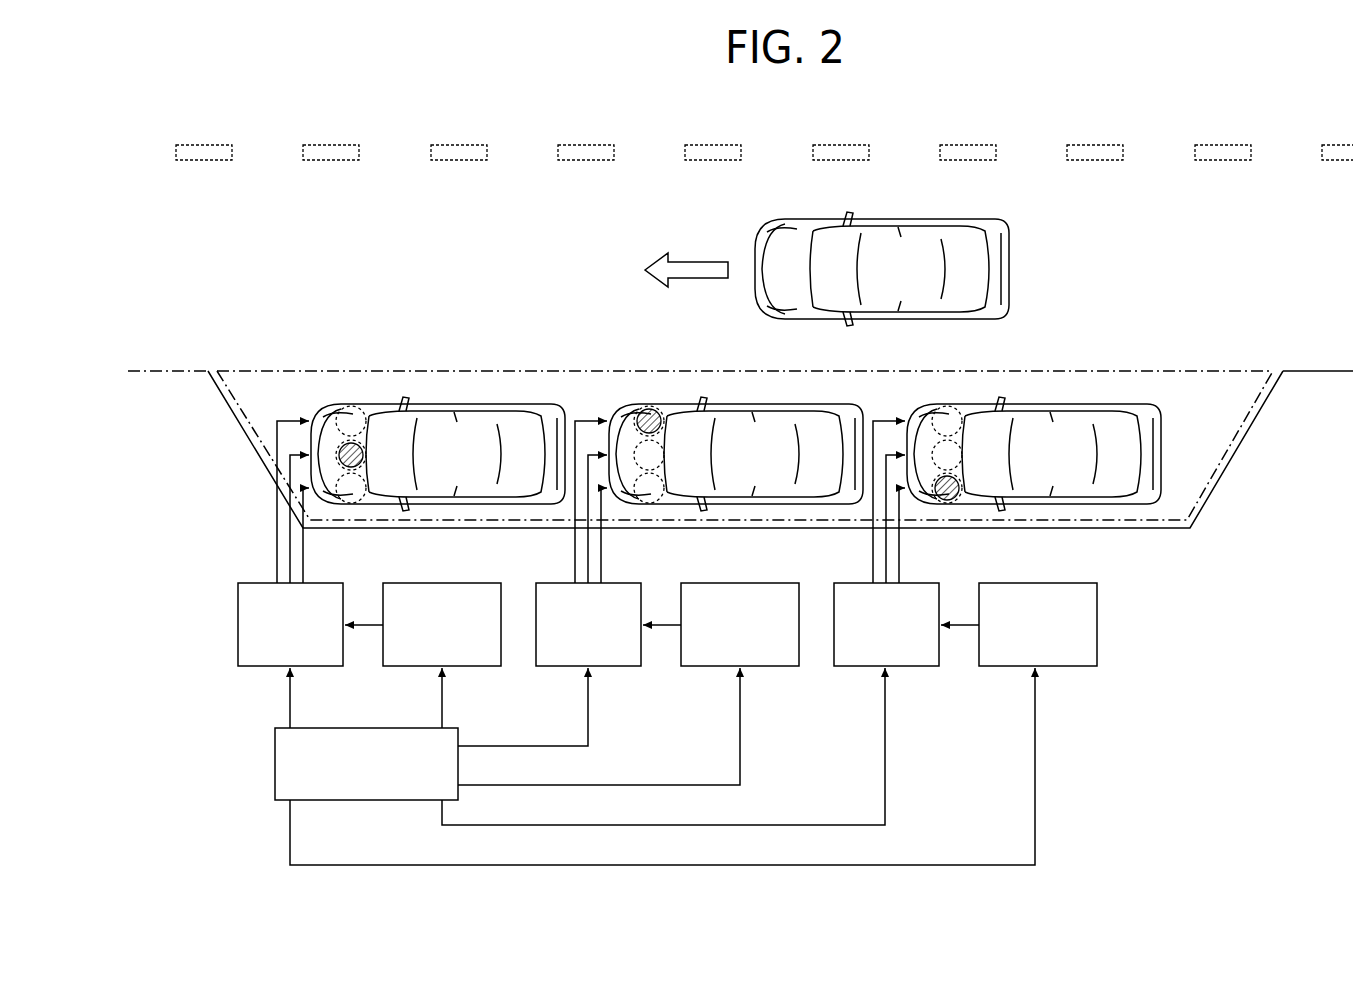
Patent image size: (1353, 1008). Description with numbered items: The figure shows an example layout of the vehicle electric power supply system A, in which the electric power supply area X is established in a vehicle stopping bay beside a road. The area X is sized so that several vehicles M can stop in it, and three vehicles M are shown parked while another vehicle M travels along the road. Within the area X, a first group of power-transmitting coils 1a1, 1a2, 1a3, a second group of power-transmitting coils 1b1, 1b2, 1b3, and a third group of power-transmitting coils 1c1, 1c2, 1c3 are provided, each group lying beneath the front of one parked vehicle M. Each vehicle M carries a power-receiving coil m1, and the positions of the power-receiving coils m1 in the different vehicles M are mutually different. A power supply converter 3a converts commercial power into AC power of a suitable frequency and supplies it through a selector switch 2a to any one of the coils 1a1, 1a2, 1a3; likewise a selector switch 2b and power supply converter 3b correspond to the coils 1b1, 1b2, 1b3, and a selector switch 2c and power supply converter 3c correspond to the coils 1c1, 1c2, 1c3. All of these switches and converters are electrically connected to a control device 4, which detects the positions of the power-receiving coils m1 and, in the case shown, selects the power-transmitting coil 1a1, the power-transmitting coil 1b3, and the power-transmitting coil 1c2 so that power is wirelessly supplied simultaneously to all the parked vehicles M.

The power-transmitting coil 1a1 is at (367, 456).
The power-transmitting coil 1a2 is at (363, 501).
The power-transmitting coil 1a3 is at (362, 409).
The power-transmitting coil 1b1 is at (665, 455).
The power-transmitting coil 1b2 is at (661, 501).
The power-transmitting coil 1b3 is at (662, 408).
The power-transmitting coil 1c1 is at (963, 455).
The power-transmitting coil 1c2 is at (959, 501).
The power-transmitting coil 1c3 is at (960, 408).
The power-receiving coil m1 is at (351, 442).
The vehicle M is at (890, 212).
The selector switch 2a is at (344, 593).
The selector switch 2b is at (642, 593).
The selector switch 2c is at (940, 593).
The power supply converter 3a is at (502, 593).
The power supply converter 3b is at (800, 593).
The power supply converter 3c is at (1098, 593).
The control device 4 is at (275, 759).
The vehicle electric power supply system A is at (250, 533).
The electric power supply area X is at (1186, 368).